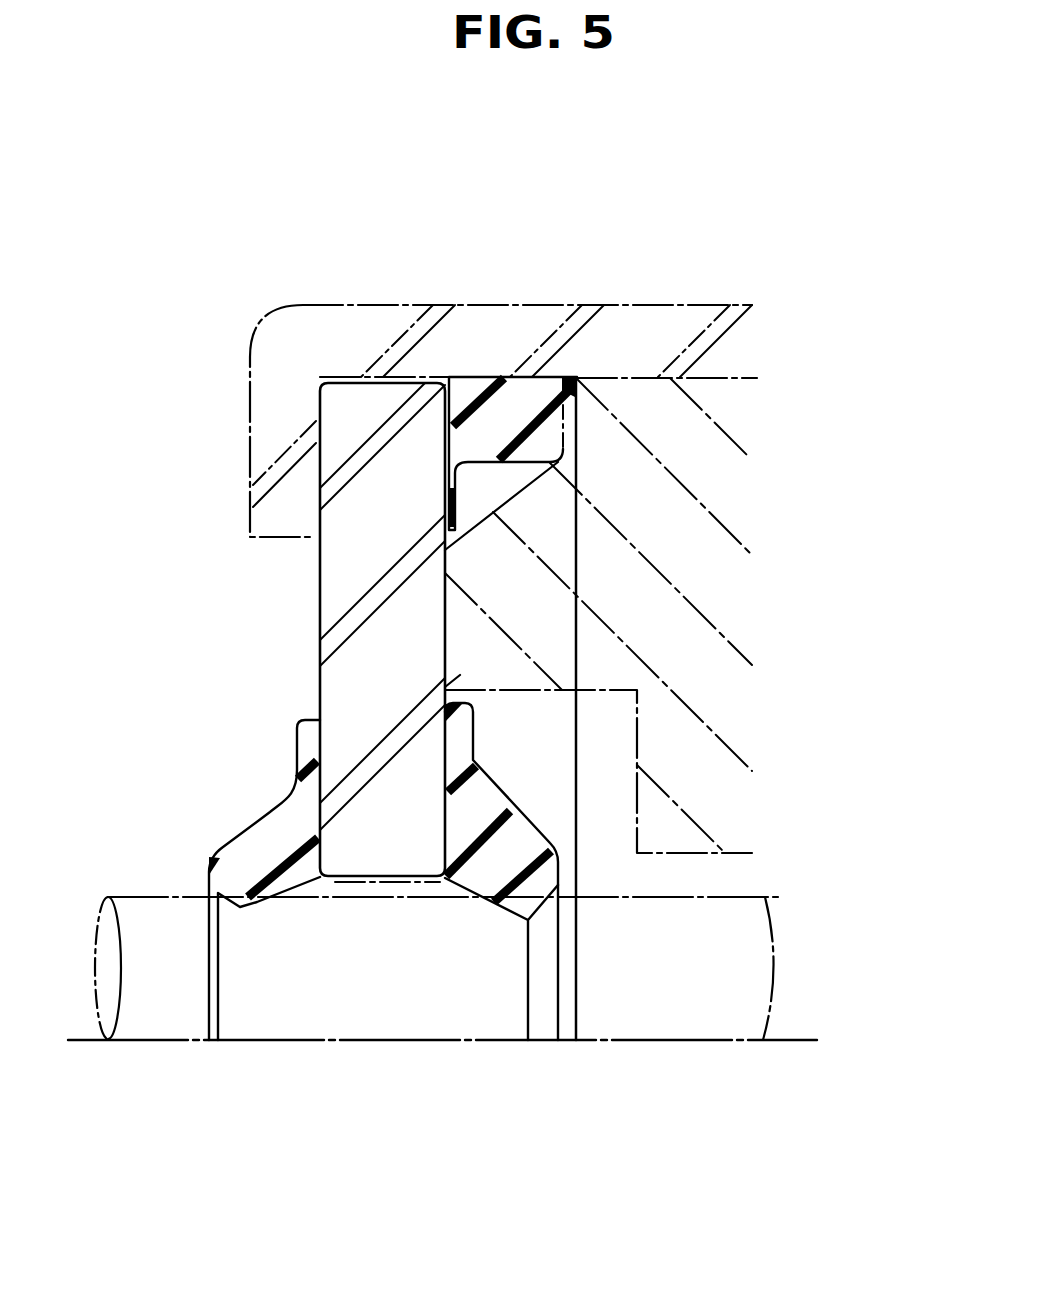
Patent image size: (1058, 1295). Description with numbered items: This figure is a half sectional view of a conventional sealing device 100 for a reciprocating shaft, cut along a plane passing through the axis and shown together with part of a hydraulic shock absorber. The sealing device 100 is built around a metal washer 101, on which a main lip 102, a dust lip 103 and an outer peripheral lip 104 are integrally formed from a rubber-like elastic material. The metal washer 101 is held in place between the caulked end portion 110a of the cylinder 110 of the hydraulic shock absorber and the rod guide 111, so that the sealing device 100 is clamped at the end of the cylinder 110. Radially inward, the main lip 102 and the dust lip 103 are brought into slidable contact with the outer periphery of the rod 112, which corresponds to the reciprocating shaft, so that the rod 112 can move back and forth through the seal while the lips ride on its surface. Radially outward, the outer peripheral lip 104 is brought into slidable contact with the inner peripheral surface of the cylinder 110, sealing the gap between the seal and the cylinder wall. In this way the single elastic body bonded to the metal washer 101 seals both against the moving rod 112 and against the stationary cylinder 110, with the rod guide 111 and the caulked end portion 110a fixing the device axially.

The sealing device 100 is at (346, 678).
The metal washer 101 is at (382, 417).
The main lip 102 is at (492, 873).
The dust lip 103 is at (240, 905).
The outer peripheral lip 104 is at (507, 400).
The cylinder 110 is at (422, 353).
The caulked end portion 110a is at (272, 418).
The rod guide 111 is at (707, 563).
The rod 112 is at (680, 1013).